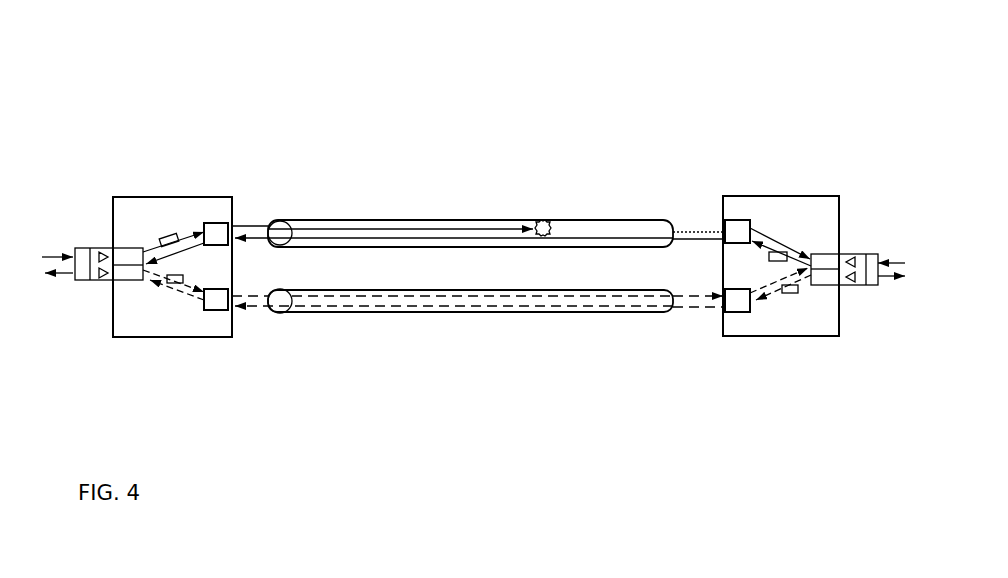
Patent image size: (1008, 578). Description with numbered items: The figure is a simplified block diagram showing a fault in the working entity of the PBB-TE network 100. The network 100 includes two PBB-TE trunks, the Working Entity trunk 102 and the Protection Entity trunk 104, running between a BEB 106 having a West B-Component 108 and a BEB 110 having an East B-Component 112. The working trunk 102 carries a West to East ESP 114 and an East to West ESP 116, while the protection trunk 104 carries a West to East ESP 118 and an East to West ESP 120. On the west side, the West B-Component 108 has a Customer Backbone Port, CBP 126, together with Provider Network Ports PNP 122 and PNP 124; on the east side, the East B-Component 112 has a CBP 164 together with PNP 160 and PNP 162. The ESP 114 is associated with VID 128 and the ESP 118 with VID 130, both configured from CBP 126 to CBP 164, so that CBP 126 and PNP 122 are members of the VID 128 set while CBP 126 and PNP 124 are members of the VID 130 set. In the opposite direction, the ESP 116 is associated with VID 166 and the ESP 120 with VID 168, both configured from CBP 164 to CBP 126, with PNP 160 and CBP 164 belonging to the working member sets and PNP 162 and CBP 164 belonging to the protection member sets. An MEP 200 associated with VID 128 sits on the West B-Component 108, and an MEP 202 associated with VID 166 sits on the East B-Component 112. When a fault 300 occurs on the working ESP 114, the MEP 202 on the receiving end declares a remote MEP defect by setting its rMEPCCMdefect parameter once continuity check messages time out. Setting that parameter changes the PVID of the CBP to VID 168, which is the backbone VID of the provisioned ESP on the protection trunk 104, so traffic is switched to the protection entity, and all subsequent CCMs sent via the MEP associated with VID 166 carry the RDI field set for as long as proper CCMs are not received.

The network 100 is at (103, 55).
The PBB-TE Working Entity trunk 102 is at (442, 218).
The PBB-TE Protection Entity trunk 104 is at (405, 312).
The BEB 106 is at (138, 365).
The West B-Component 108 is at (167, 155).
The BEB 110 is at (798, 365).
The East B-Component 112 is at (817, 170).
The West to East ESP 114 is at (150, 252).
The East to West ESP 116 is at (175, 253).
The West to East ESP 118 is at (187, 286).
The East to West ESP 120 is at (183, 297).
The PNP 122 is at (231, 221).
The PNP 124 is at (232, 325).
The Customer Backbone Port 126 is at (95, 238).
The VID 128 is at (170, 236).
The VID 130 is at (175, 285).
The PNP 160 is at (722, 224).
The PNP 162 is at (723, 305).
The Customer Backbone Port 164 is at (832, 238).
The VID 166 is at (770, 258).
The VID 168 is at (795, 294).
The MEP 200 is at (68, 256).
The MEP 202 is at (880, 262).
The fault 300 is at (543, 220).